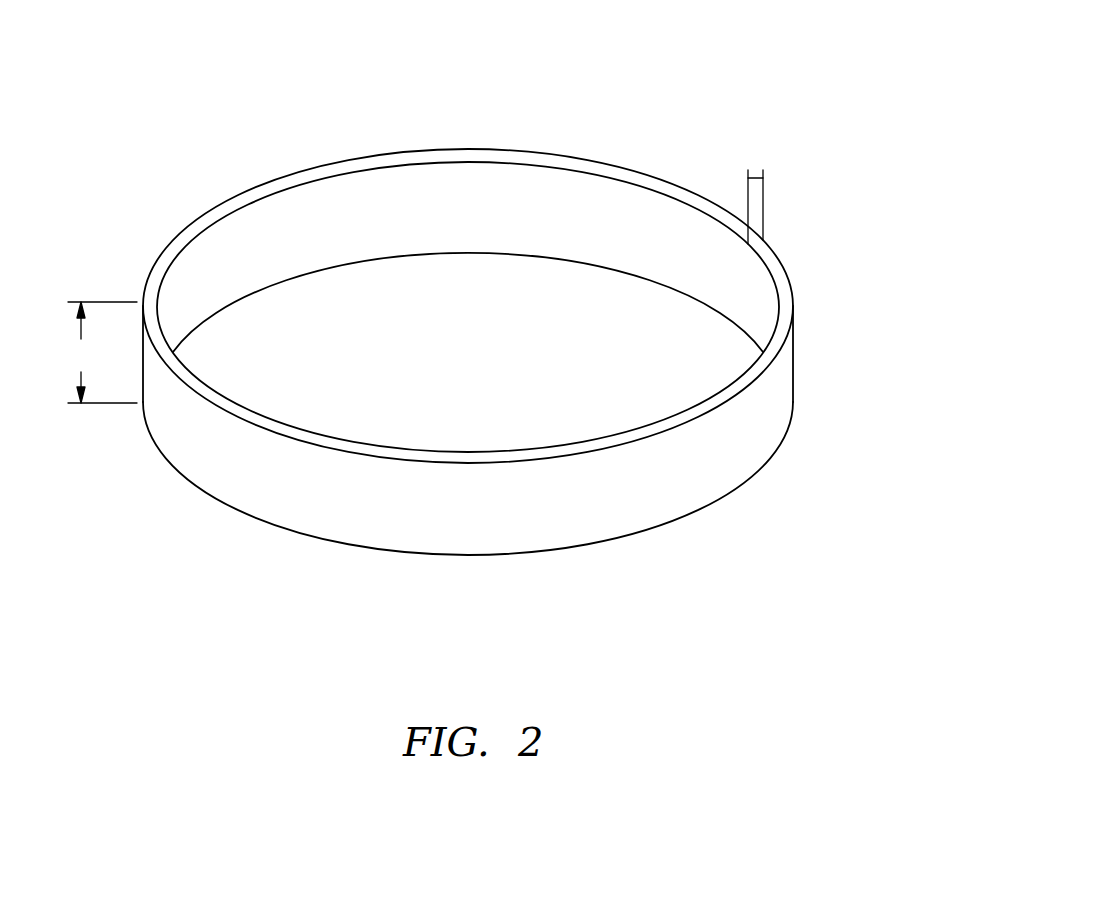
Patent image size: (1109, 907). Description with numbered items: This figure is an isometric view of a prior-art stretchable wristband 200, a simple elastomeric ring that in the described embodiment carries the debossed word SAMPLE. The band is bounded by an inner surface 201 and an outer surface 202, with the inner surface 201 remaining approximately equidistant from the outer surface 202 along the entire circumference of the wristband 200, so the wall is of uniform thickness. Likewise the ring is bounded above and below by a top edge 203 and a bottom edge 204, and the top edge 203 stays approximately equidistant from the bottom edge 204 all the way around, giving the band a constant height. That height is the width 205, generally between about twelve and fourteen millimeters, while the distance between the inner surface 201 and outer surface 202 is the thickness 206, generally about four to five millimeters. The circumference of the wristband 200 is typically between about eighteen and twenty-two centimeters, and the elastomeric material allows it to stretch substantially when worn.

The stretchable wristband 200 is at (872, 36).
The inner surface 201 is at (452, 185).
The outer surface 202 is at (233, 483).
The top edge 203 is at (623, 437).
The bottom edge 204 is at (322, 250).
The width 205 is at (99, 352).
The thickness 206 is at (751, 178).